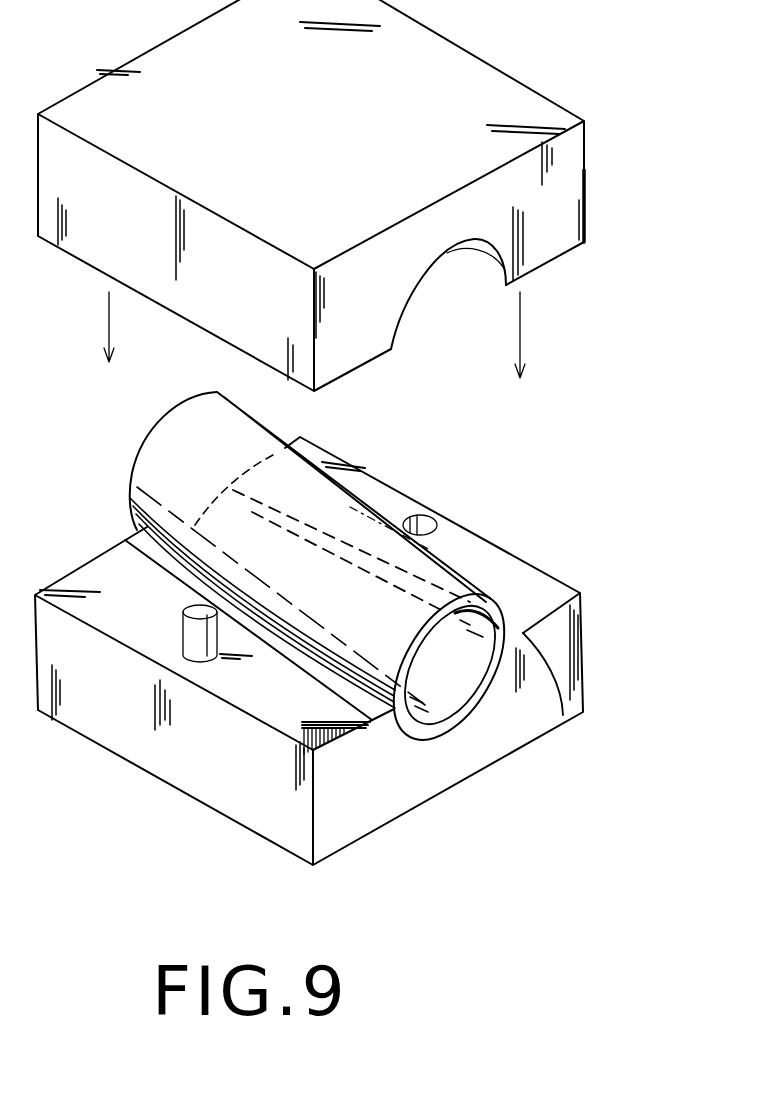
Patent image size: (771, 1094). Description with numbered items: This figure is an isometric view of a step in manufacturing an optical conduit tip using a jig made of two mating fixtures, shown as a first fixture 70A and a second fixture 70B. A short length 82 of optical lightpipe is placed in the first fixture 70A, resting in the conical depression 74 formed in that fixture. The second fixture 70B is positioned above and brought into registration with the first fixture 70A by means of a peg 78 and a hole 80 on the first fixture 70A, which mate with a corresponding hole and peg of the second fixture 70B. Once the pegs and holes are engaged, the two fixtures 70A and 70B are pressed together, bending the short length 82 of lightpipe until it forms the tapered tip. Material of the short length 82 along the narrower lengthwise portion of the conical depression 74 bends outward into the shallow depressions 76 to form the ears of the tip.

The first fixture 70A is at (540, 602).
The second fixture 70B is at (504, 67).
The conical depression 74 is at (409, 740).
The shallow depressions 76 is at (345, 692).
The peg 78 is at (183, 609).
The hole 80 is at (423, 515).
The short length of optical lightpipe 82 is at (180, 448).